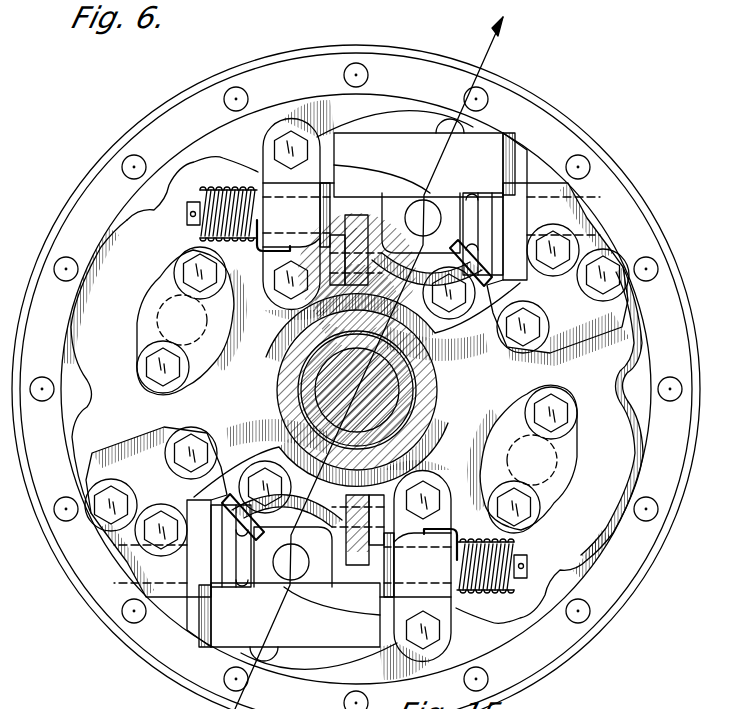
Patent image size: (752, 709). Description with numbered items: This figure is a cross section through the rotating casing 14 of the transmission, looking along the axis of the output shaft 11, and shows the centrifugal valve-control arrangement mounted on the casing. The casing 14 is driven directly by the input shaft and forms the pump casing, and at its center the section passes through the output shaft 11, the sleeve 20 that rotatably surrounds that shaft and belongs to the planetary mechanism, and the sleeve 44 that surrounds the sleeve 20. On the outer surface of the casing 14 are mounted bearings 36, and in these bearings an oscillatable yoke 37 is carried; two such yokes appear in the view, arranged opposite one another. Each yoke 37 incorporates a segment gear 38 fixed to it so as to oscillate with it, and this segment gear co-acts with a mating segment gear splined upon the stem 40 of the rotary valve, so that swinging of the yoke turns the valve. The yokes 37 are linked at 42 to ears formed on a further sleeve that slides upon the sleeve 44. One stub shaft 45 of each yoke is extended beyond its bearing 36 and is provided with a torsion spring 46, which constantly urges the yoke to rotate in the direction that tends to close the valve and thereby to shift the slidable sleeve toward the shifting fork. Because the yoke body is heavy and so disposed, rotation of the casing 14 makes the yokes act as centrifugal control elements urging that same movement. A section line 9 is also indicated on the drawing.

The section line 9 is at (369, 358).
The output shaft 11 is at (330, 380).
The casing 14 is at (90, 196).
The sleeve 20 is at (405, 382).
The bearings 36 is at (298, 193).
The yoke 37 is at (432, 161).
The segment gear 38 is at (486, 283).
The stem 40 is at (428, 213).
The link 42 is at (318, 312).
The sleeve 44 is at (290, 416).
The stub shaft 45 is at (282, 238).
The torsion spring 46 is at (200, 237).